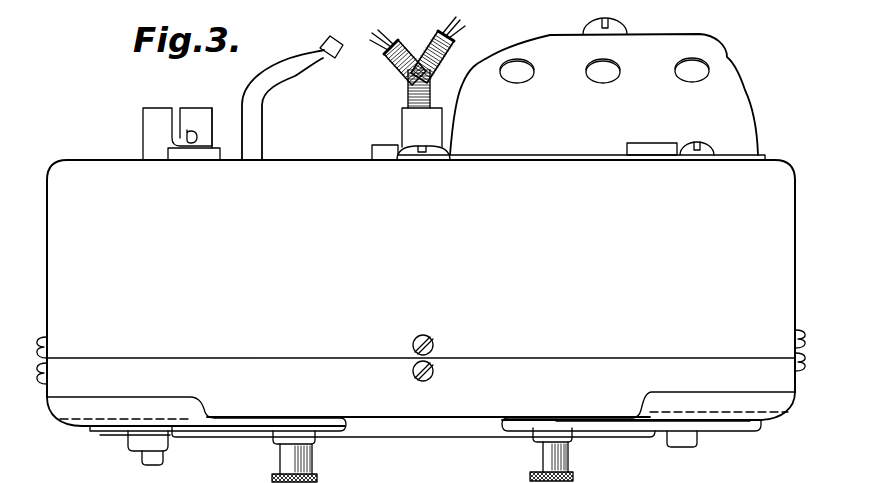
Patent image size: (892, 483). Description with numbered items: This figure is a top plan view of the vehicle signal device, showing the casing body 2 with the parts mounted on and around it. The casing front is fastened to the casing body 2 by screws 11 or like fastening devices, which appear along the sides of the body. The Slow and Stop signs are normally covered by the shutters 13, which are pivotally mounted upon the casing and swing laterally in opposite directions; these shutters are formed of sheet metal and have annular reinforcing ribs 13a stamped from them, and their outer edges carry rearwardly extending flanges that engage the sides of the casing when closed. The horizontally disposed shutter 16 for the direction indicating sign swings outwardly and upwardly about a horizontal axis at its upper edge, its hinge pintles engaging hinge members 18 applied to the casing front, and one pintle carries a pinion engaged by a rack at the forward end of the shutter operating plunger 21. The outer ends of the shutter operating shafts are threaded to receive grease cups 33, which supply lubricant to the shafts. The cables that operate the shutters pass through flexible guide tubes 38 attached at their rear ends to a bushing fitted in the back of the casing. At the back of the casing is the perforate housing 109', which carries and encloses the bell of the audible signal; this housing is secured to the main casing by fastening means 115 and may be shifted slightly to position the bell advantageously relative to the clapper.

The casing body 2 is at (760, 180).
The screws 11 is at (50, 376).
The shutters 13 is at (234, 432).
The annular reinforcing ribs 13a is at (110, 435).
The shutter 16 is at (362, 428).
The hinge members 18 is at (150, 463).
The shutter operating plunger 21 is at (433, 352).
The grease cups 33 is at (552, 443).
The flexible guide tubes 38 is at (408, 85).
The perforate housing 109' is at (604, 86).
The fastening means 115 is at (443, 152).